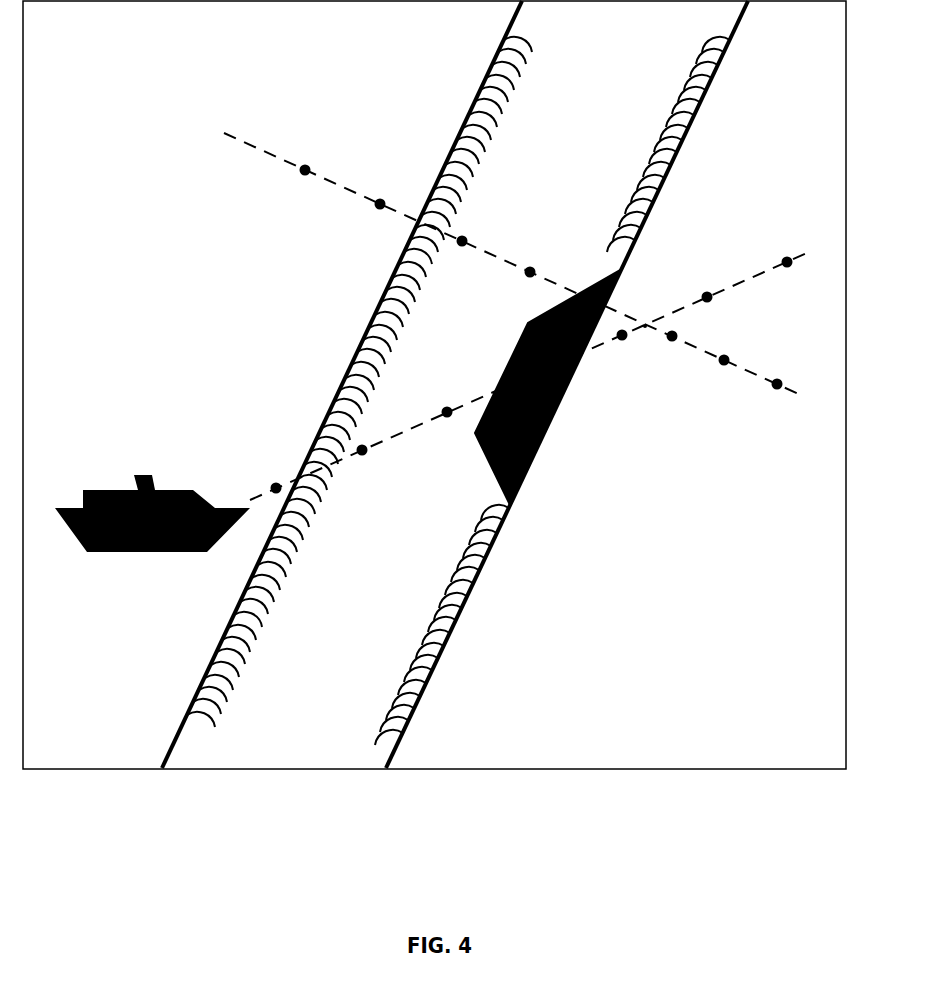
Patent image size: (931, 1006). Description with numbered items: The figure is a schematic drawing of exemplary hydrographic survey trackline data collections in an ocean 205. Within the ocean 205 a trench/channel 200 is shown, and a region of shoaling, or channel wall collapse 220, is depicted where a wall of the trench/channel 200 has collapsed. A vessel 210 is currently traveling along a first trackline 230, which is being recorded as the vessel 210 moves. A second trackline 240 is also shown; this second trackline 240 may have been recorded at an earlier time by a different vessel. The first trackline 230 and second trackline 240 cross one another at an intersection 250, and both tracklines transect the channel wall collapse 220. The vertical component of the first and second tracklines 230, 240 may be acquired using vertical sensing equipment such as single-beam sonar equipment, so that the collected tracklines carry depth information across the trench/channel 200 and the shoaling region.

The trench/channel 200 is at (268, 725).
The ocean 205 is at (715, 750).
The vessel 210 is at (150, 475).
The channel wall collapse 220 is at (560, 403).
The first trackline 230 is at (757, 275).
The second trackline 240 is at (745, 373).
The trackline intersection 250 is at (644, 325).